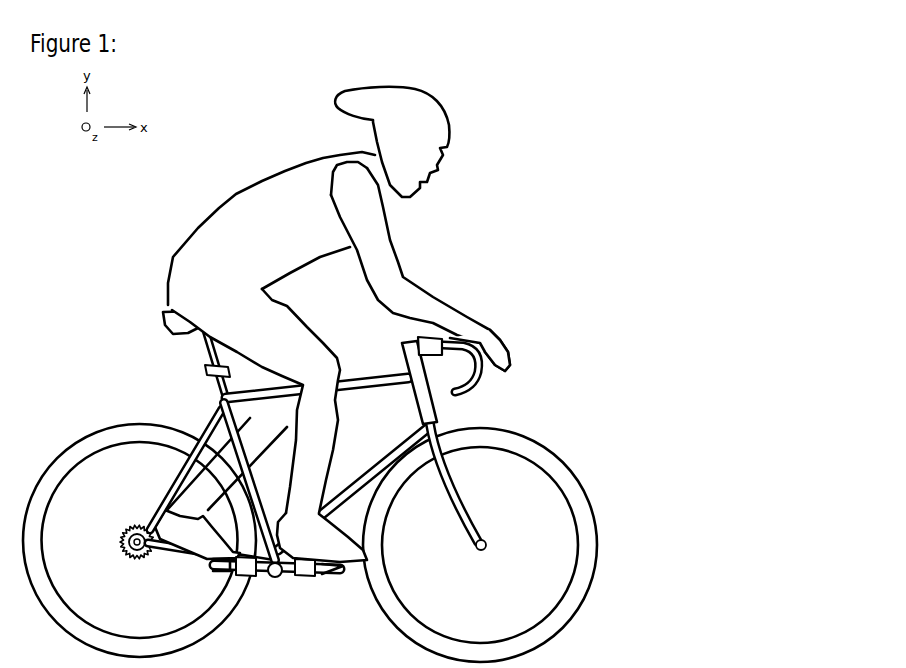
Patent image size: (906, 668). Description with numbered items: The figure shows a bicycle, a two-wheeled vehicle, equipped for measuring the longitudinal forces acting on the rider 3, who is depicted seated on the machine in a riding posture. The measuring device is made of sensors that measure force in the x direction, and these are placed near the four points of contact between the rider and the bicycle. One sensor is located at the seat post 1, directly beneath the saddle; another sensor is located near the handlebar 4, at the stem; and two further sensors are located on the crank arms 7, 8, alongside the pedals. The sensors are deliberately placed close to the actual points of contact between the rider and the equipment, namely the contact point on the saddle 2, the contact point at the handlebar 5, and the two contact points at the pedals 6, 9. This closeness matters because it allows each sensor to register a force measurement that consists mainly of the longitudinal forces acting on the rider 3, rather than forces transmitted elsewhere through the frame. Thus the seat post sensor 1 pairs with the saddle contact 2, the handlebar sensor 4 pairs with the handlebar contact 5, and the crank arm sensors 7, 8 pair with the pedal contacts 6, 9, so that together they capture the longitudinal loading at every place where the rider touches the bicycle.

The seat post sensor point 1 is at (207, 367).
The saddle contact point 2 is at (187, 313).
The rider 3 is at (420, 266).
The handlebar sensor point 4 is at (440, 340).
The handlebar contact point 5 is at (490, 362).
The pedal contact point 6 is at (338, 567).
The crank arm sensor point 7 is at (308, 575).
The crank arm sensor point 8 is at (248, 575).
The pedal contact point 9 is at (220, 562).